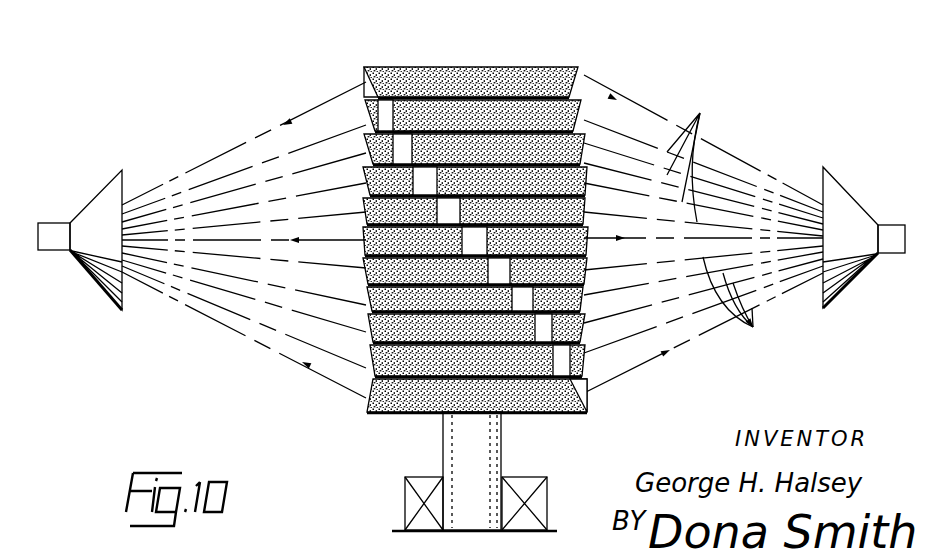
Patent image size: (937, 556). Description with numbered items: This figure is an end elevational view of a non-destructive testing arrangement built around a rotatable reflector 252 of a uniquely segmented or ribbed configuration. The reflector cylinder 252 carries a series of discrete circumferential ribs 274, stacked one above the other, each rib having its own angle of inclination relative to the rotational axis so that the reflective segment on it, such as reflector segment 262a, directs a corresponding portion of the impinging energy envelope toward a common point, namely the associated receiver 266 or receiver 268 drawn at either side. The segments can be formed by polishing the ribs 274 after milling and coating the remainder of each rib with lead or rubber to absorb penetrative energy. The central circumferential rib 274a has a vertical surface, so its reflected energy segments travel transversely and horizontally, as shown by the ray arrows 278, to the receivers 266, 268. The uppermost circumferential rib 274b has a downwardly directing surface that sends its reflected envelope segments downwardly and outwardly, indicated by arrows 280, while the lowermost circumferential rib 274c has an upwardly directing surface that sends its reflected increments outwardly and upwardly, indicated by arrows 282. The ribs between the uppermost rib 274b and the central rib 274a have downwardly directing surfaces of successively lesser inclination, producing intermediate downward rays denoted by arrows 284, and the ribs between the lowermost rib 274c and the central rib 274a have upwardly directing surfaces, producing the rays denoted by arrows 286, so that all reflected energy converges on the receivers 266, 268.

The rotatable reflector 252 is at (475, 237).
The reflector segment 262a is at (520, 300).
The receiver 266 is at (833, 183).
The receiver 268 is at (101, 196).
The circumferential ribs 274 is at (475, 237).
The central circumferential rib 274a is at (366, 247).
The uppermost circumferential rib 274b is at (484, 70).
The lowermost circumferential rib 274c is at (420, 400).
The ray arrows 278 is at (230, 243).
The arrows 280 is at (248, 141).
The arrows 282 is at (236, 328).
The arrows 284 is at (700, 113).
The arrows 286 is at (753, 301).